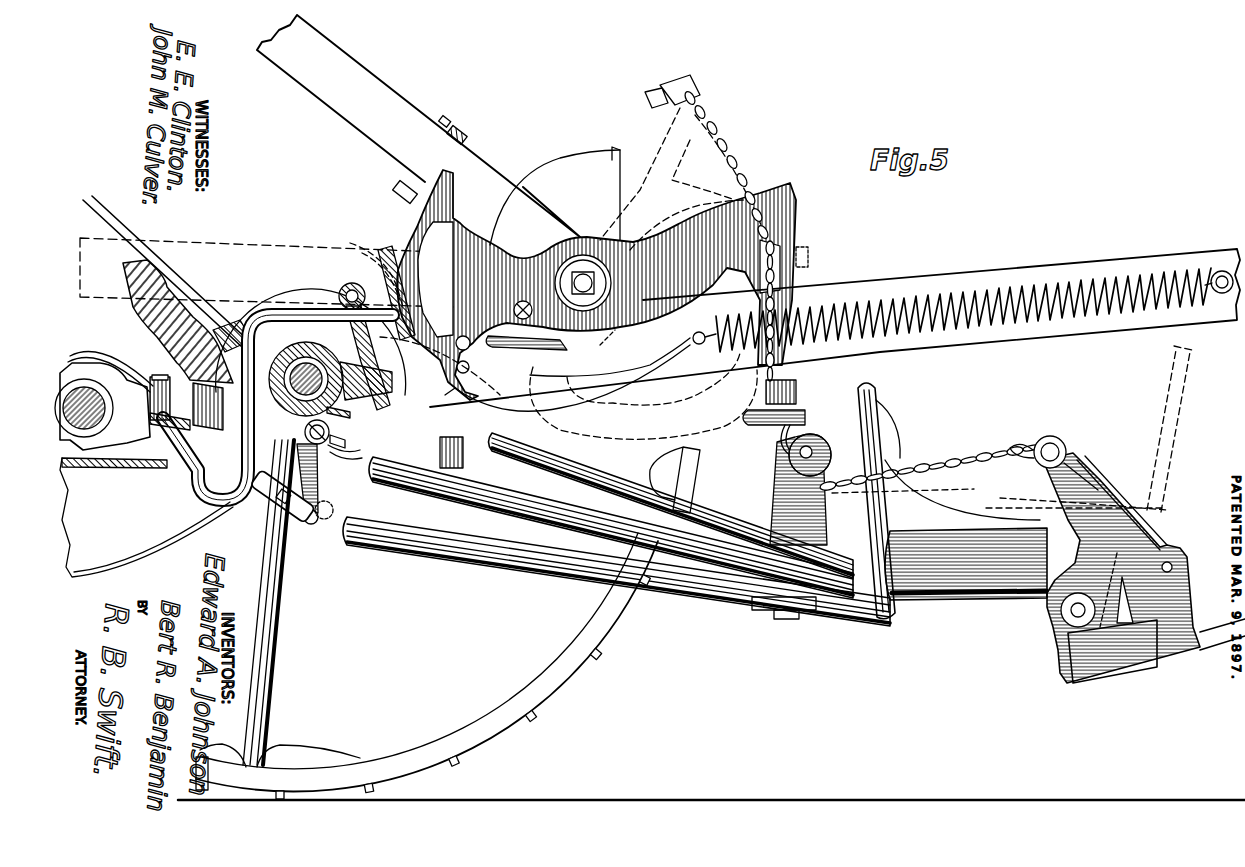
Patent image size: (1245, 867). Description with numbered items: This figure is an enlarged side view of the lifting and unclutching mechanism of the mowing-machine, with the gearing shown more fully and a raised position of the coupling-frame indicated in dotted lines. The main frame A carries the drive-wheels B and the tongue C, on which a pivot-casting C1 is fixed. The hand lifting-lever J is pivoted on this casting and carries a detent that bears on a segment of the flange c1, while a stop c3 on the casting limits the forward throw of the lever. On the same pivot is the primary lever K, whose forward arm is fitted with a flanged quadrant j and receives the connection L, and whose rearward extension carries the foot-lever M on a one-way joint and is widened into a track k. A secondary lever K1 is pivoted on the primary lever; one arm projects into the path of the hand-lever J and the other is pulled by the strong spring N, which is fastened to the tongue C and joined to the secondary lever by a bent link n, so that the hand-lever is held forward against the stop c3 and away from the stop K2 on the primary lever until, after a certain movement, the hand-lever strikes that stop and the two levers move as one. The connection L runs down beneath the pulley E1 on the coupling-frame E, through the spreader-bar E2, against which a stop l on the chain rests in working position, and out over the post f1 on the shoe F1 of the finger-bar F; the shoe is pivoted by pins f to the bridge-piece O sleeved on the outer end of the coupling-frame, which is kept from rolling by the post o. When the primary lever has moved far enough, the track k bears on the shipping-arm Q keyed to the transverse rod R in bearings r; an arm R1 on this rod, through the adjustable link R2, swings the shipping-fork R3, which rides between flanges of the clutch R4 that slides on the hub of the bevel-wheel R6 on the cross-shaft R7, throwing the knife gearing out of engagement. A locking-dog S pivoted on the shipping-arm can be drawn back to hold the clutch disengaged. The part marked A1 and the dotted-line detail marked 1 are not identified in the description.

The hand lifting-lever J is at (385, 152).
The track k is at (410, 222).
The primary lever K is at (643, 293).
The secondary lever K1 is at (457, 377).
The stop K2 is at (500, 250).
The pivot-casting C1 is at (585, 267).
The flange c1 is at (543, 193).
The stop c3 is at (610, 183).
The dotted position 1 is at (612, 330).
The flanged quadrant j is at (794, 270).
The tongue C is at (993, 328).
The spring N is at (914, 333).
The bent link n is at (637, 380).
The bevel-wheel R6 is at (190, 350).
The main frame A is at (298, 357).
The locking-dog S is at (347, 290).
The foot-lever M is at (230, 505).
The shipping-fork R3 is at (107, 373).
The clutch R4 is at (83, 437).
The cross-shaft R7 is at (100, 425).
The transverse rod R is at (305, 432).
The bearings r is at (343, 445).
The shipping-arm Q is at (363, 447).
The arm R1 is at (310, 525).
The adjustable link R2 is at (266, 508).
The post A1 is at (455, 450).
The coupling-frame E is at (683, 568).
The drive-wheels B is at (439, 739).
The stop l is at (792, 392).
The pulley E1 is at (820, 438).
The spreader-bar E2 is at (749, 418).
The post o is at (873, 422).
The connection L is at (963, 459).
The bridge-piece O is at (1042, 557).
The shoe F1 is at (1060, 667).
The pivot-pins f is at (1072, 613).
The post f1 is at (1098, 455).
The finger-bar F is at (1220, 637).